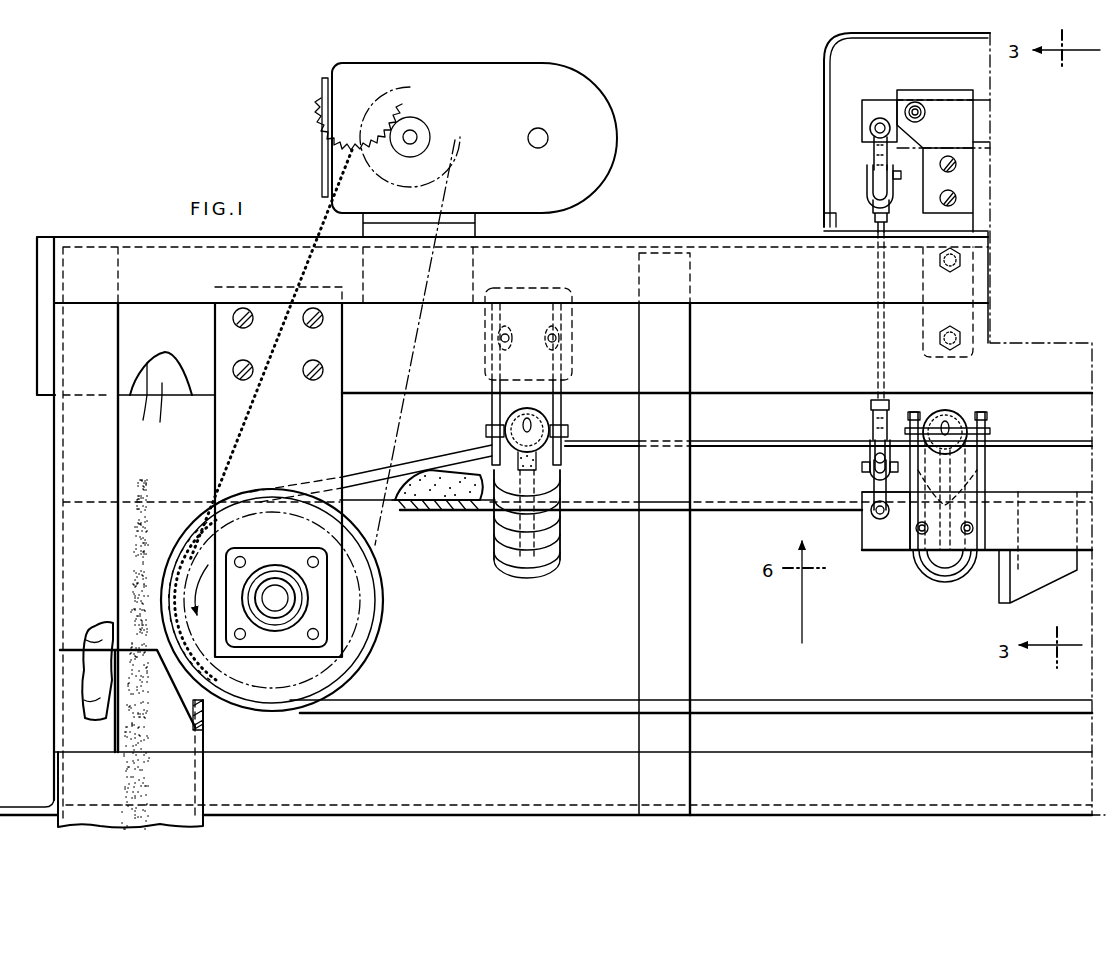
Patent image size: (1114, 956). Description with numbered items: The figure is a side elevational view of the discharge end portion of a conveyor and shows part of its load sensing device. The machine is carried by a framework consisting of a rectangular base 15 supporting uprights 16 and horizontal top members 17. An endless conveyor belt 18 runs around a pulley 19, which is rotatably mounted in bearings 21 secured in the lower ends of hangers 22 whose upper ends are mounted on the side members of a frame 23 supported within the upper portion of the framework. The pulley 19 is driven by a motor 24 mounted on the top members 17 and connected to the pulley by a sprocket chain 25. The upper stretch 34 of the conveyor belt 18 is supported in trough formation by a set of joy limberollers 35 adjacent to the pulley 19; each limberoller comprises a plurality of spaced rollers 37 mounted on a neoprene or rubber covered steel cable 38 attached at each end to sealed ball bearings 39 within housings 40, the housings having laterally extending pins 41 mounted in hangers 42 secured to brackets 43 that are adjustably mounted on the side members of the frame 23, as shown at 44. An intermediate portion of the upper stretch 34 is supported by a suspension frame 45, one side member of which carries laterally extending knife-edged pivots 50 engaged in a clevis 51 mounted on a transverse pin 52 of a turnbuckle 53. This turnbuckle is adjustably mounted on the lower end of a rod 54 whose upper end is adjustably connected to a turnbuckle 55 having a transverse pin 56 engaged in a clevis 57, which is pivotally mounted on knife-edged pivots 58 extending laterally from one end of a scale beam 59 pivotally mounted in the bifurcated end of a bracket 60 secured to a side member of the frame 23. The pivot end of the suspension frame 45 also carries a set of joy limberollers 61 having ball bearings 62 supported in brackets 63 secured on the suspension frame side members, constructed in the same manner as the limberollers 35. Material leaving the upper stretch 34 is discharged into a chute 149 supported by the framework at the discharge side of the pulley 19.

The rectangular base 15 is at (25, 803).
The uprights 16 is at (95, 640).
The horizontal top members 17 is at (152, 258).
The endless conveyor belt 18 is at (1060, 443).
The pulley 19 is at (380, 612).
The bearings 21 is at (283, 560).
The hangers 22 is at (228, 442).
The frame 23 is at (147, 397).
The motor 24 is at (513, 162).
The sprocket chain 25 is at (330, 220).
The upper stretch of the conveyor belt 34 is at (745, 465).
The set of joy limberollers 35 is at (492, 540).
The spaced rollers 37 is at (543, 533).
The neoprene or rubber covered steel cable 38 is at (527, 423).
The sealed ball bearings 39 is at (537, 443).
The housings 40 is at (548, 408).
The laterally extending pins 41 is at (486, 431).
The hangers 42 is at (492, 407).
The brackets 43 is at (573, 353).
The adjustable mounting 44 is at (556, 338).
The suspension frame 45 is at (880, 555).
The knife-edged pivots 50 is at (876, 517).
The clevis 51 is at (876, 486).
The transverse pin 52 is at (865, 462).
The turnbuckle 53 is at (892, 415).
The rod 54 is at (876, 352).
The turnbuckle 55 is at (875, 208).
The transverse pin 56 is at (868, 178).
The clevis 57 is at (876, 158).
The knife-edged pivots 58 is at (872, 124).
The scale beam 59 is at (875, 100).
The bracket 60 is at (942, 98).
The set of joy limberollers 61 is at (930, 565).
The ball bearings 62 is at (958, 417).
The brackets 63 is at (990, 455).
The chute 149 is at (205, 718).